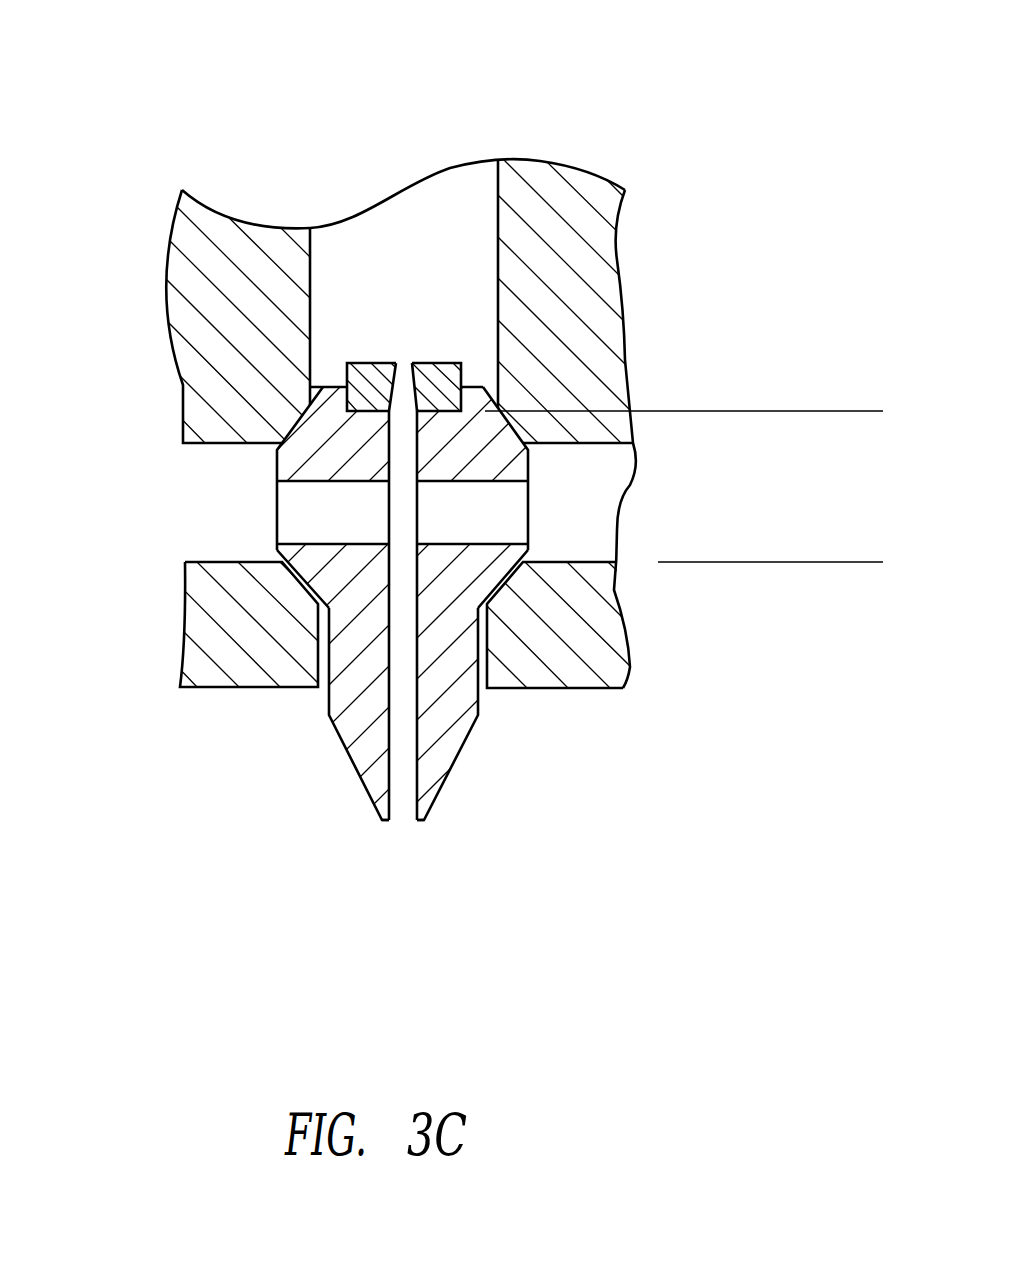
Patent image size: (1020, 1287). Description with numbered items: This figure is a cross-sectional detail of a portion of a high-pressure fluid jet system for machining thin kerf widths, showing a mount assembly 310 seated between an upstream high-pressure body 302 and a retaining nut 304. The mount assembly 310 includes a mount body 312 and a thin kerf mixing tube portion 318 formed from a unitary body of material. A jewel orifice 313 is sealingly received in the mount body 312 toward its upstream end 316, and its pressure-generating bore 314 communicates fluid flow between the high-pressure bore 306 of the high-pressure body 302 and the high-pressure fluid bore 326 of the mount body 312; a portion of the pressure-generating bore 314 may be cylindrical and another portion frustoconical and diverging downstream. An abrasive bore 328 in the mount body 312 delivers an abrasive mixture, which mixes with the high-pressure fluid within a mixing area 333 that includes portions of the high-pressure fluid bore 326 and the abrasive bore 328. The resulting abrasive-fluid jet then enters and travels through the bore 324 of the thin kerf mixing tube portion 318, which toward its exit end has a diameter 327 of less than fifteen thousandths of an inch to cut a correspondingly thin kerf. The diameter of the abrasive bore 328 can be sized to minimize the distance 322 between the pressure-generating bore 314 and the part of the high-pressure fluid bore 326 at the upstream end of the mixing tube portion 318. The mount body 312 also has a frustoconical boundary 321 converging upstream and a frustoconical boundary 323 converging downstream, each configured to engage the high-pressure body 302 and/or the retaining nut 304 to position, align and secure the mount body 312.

The upstream high-pressure body 302 is at (587, 310).
The retaining nut 304 is at (557, 625).
The high-pressure bore 306 is at (458, 222).
The mount assembly 310 is at (443, 487).
The mount body 312 is at (509, 450).
The jewel orifice 313 is at (438, 380).
The pressure-generating bore 314 is at (517, 216).
The upstream end 316 is at (337, 384).
The thin kerf mixing tube portion 318 is at (413, 603).
The frustoconical boundary converging upstream 321 is at (292, 423).
The distance 322 is at (820, 607).
The frustoconical boundary converging downstream 323 is at (507, 590).
The bore 324 is at (401, 813).
The high-pressure fluid bore 326 is at (403, 450).
The diameter 327 is at (310, 771).
The abrasive bore 328 is at (294, 519).
The mixing area 333 is at (412, 512).